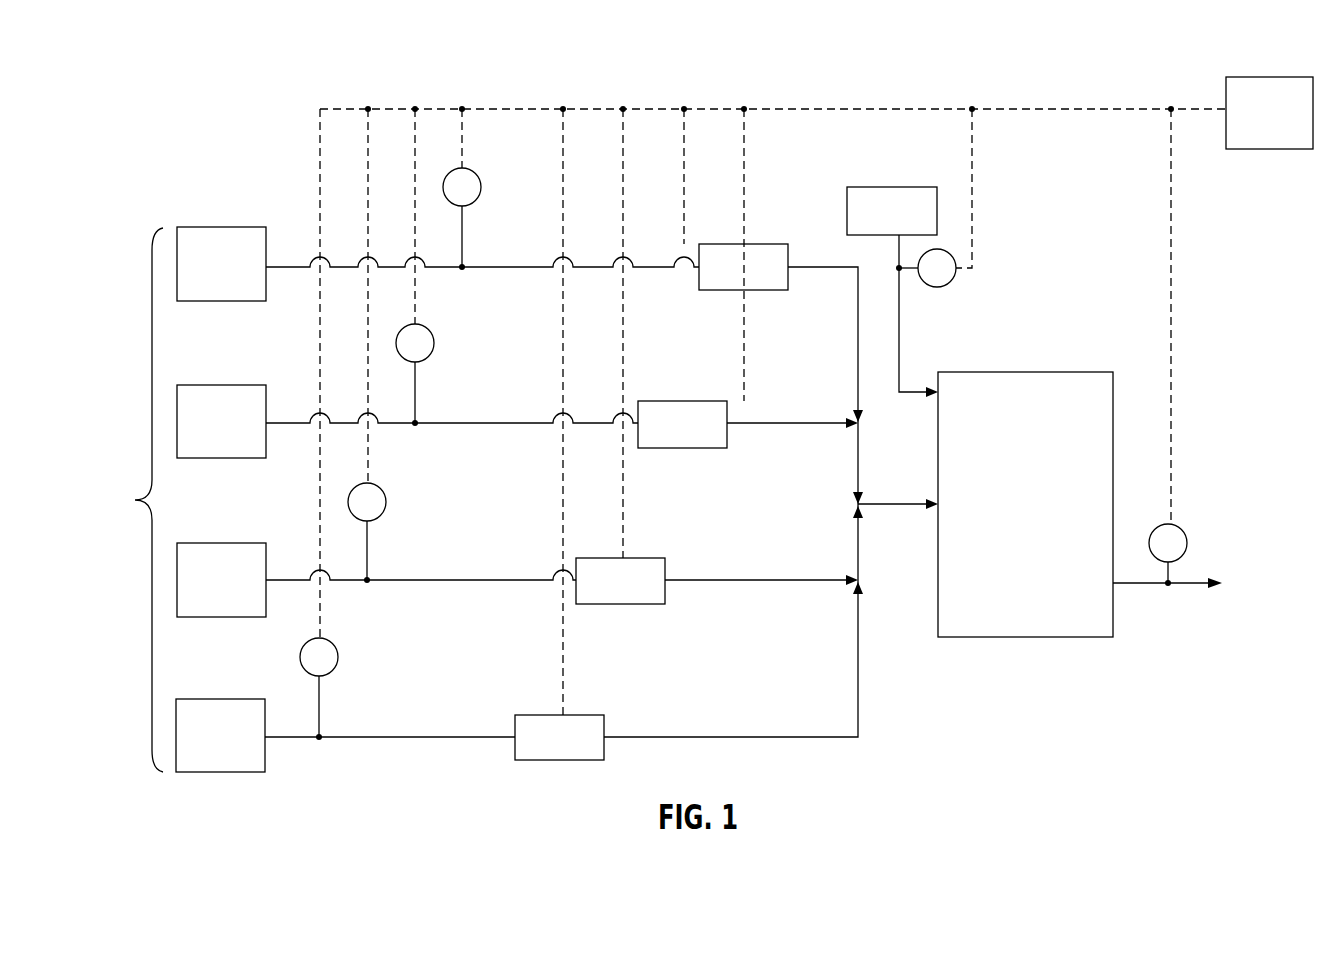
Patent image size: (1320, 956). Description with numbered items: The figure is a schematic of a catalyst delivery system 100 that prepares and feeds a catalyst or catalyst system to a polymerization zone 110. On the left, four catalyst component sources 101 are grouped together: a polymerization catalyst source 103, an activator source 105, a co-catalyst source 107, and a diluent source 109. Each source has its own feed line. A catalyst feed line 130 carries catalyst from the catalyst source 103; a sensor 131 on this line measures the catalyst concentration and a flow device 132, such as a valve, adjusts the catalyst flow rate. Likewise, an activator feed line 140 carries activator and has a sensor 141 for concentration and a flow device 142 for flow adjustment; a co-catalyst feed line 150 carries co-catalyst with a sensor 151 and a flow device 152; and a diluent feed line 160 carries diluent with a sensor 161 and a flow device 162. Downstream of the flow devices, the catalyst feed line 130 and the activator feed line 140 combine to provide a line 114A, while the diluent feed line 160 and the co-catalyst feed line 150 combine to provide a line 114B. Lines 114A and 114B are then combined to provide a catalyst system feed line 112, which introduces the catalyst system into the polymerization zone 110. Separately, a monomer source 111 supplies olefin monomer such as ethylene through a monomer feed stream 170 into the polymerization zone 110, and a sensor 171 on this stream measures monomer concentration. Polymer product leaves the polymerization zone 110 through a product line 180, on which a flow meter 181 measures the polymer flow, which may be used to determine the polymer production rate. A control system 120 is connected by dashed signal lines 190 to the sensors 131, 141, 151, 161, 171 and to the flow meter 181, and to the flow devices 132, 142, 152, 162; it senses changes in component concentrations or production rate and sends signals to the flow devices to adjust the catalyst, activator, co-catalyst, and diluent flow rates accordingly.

The catalyst delivery system 100 is at (230, 74).
The sources 101 is at (177, 499).
The polymerization catalyst source 103 is at (245, 278).
The activator source 105 is at (244, 436).
The co-catalyst source 107 is at (244, 594).
The diluent source 109 is at (243, 750).
The polymerization zone 110 is at (1048, 518).
The monomer source 111 is at (915, 226).
The catalyst system feed line 112 is at (888, 503).
The line 114A is at (856, 468).
The line 114B is at (856, 549).
The control system 120 is at (1293, 126).
The catalyst feed line 130 is at (500, 266).
The sensor 131 is at (475, 176).
The flow device 132 is at (766, 282).
The activator feed line 140 is at (460, 422).
The sensor 141 is at (428, 332).
The flow device 142 is at (705, 439).
The co-catalyst feed line 150 is at (412, 579).
The sensor 151 is at (380, 490).
The flow device 152 is at (643, 596).
The diluent feed line 160 is at (398, 736).
The sensor 161 is at (333, 645).
The flow device 162 is at (582, 752).
The monomer feed stream 170 is at (900, 312).
The sensor 171 is at (950, 282).
The product line 180 is at (1192, 587).
The flow meter 181 is at (1182, 530).
The signal lines 190 is at (710, 108).